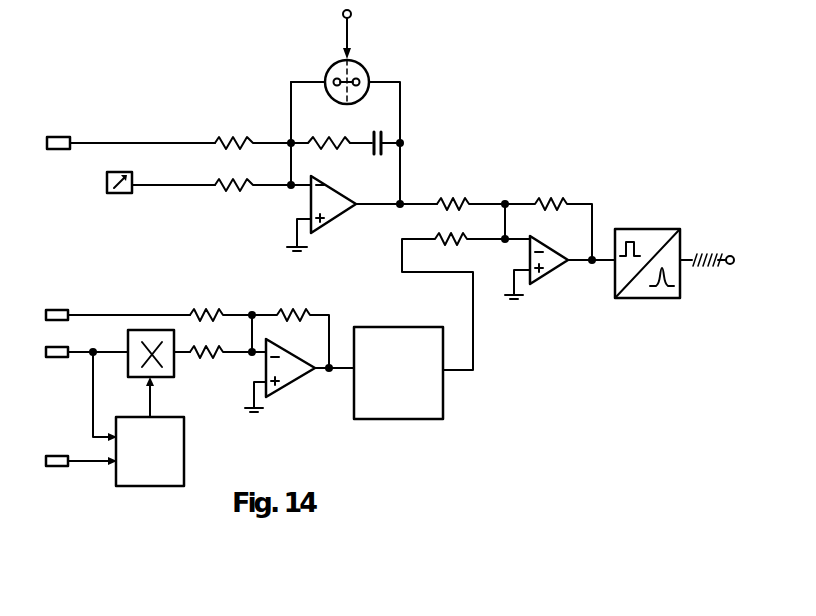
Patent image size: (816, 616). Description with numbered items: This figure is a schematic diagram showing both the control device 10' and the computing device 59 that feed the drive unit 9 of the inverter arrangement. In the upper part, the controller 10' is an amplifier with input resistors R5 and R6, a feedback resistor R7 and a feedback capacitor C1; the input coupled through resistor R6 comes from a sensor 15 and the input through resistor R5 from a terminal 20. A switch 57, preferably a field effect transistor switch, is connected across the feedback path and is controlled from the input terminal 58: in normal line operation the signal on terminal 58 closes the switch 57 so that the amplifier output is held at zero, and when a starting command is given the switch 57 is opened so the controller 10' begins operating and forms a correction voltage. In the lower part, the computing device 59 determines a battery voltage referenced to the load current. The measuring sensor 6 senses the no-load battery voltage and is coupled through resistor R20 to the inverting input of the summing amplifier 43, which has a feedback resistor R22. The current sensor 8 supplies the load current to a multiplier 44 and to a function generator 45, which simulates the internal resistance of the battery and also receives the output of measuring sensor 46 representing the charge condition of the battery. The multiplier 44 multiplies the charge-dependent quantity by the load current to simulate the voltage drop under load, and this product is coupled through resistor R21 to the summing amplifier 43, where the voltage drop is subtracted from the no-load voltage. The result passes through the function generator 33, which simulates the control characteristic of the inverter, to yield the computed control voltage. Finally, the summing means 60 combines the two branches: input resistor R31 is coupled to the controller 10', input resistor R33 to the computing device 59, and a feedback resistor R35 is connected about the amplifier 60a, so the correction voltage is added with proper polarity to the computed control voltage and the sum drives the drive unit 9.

The measuring sensor 6 is at (56, 310).
The current sensor 8 is at (57, 357).
The drive unit 9 is at (643, 232).
The controller 10' is at (362, 207).
The sensor / detector input 15 is at (117, 193).
The input terminal 20 is at (60, 137).
The function generator 33 is at (400, 419).
The summing amplifier 43 is at (296, 372).
The multiplier 44 is at (165, 376).
The function generator 45 is at (184, 457).
The measuring sensor 46 is at (56, 456).
The switch 57 is at (364, 66).
The input terminal 58 is at (351, 14).
The computing device 59 is at (235, 381).
The summing means 60 is at (560, 267).
The amplifier 60a is at (551, 268).
The resistor R5 is at (215, 135).
The resistor R6 is at (215, 178).
The feedback resistor R7 is at (326, 134).
The feedback capacitor C1 is at (384, 132).
The input resistor R31 is at (455, 194).
The input resistor R33 is at (447, 244).
The feedback resistor R35 is at (553, 194).
The resistor R20 is at (214, 311).
The second resistor R21 is at (214, 361).
The feedback resistor R22 is at (303, 312).